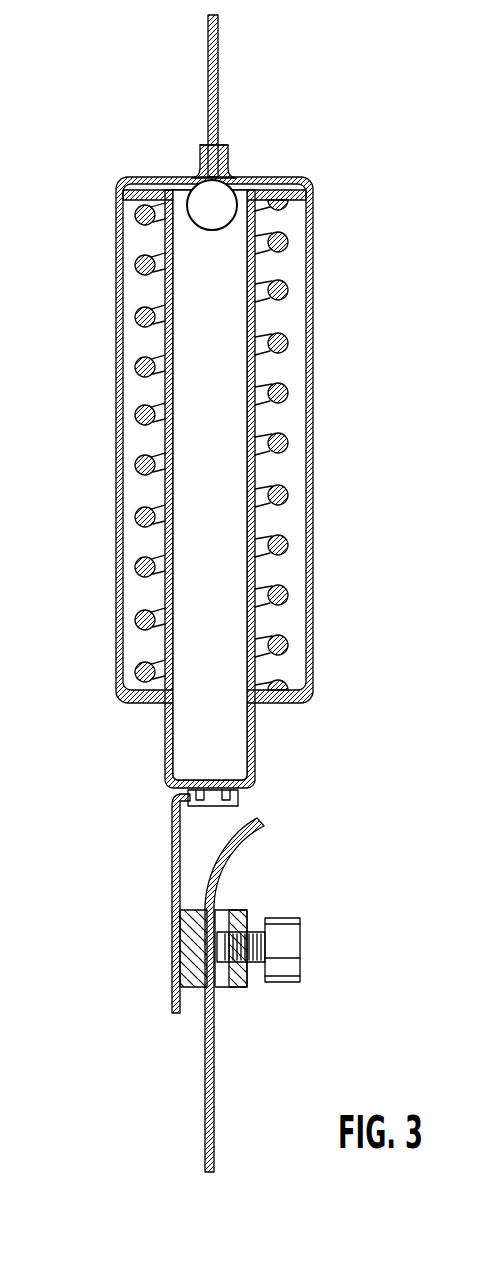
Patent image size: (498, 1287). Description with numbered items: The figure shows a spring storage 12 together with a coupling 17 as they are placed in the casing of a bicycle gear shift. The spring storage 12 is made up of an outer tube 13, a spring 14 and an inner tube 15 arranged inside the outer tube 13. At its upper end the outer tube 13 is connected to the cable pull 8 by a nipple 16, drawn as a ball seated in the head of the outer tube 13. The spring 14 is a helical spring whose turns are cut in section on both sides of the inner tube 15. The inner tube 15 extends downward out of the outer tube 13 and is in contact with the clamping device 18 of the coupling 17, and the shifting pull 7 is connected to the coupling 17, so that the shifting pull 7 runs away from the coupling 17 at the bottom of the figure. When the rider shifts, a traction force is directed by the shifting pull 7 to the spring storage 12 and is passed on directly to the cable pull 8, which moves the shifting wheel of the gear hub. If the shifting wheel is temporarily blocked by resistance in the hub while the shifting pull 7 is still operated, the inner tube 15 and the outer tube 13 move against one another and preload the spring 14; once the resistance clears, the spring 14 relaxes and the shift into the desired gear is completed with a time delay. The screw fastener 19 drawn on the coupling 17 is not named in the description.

The shifting pull 7 is at (202, 1132).
The cable pull 8 is at (208, 50).
The spring storage 12 is at (234, 464).
The outer tube 13 is at (120, 395).
The spring 14 is at (282, 288).
The inner tube 15 is at (168, 533).
The nipple 16 is at (222, 195).
The coupling 17 is at (186, 915).
The clamping device 18 is at (192, 925).
The screw 19 is at (285, 982).